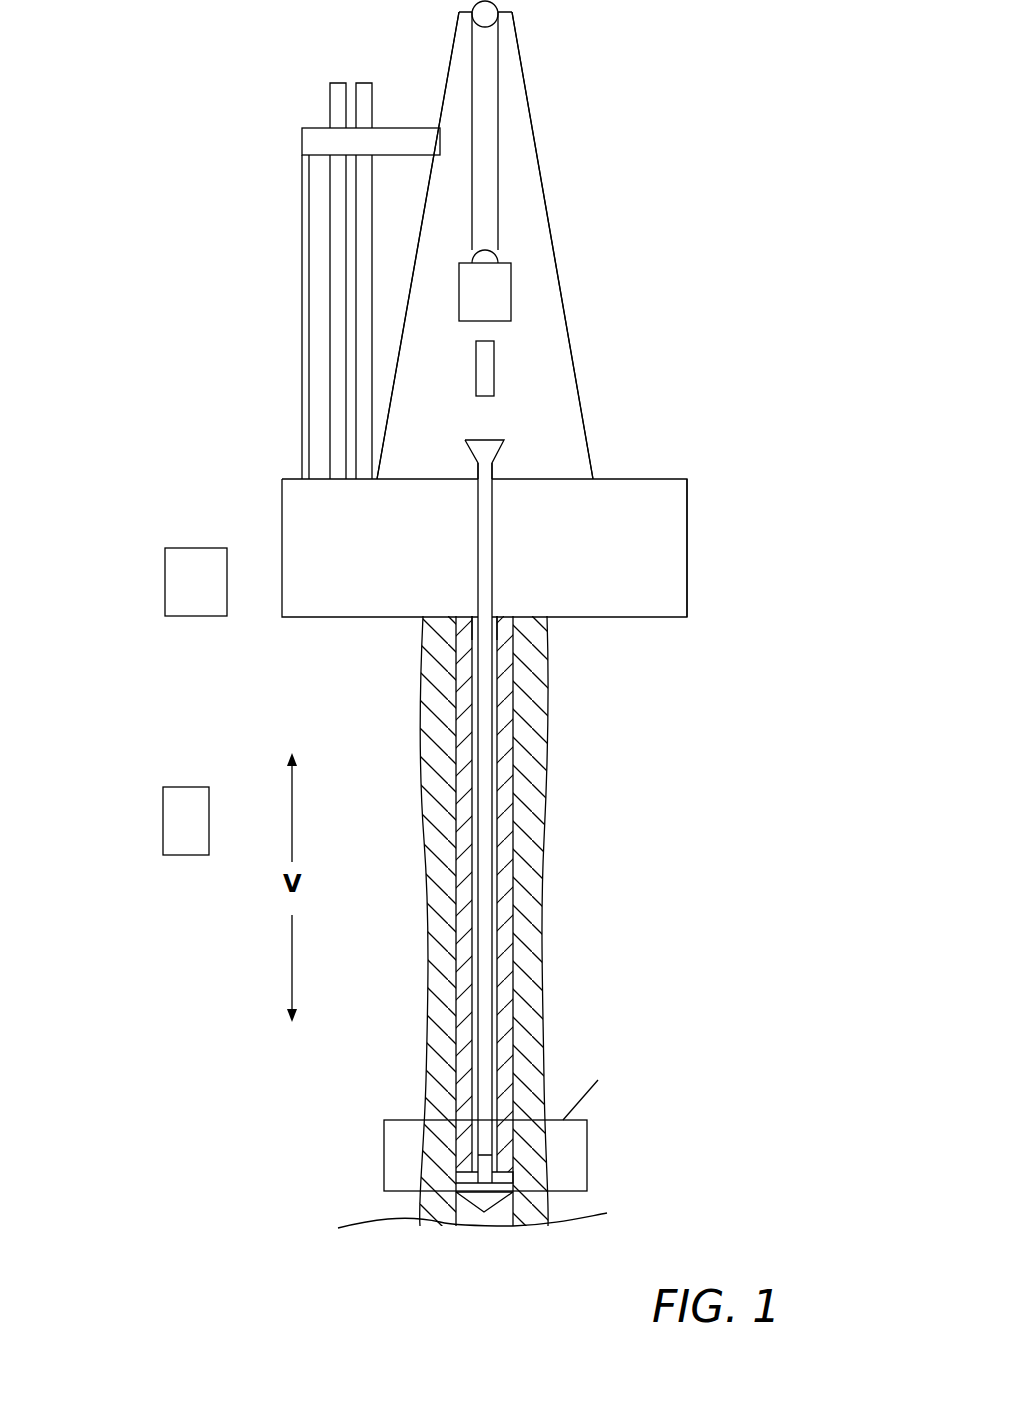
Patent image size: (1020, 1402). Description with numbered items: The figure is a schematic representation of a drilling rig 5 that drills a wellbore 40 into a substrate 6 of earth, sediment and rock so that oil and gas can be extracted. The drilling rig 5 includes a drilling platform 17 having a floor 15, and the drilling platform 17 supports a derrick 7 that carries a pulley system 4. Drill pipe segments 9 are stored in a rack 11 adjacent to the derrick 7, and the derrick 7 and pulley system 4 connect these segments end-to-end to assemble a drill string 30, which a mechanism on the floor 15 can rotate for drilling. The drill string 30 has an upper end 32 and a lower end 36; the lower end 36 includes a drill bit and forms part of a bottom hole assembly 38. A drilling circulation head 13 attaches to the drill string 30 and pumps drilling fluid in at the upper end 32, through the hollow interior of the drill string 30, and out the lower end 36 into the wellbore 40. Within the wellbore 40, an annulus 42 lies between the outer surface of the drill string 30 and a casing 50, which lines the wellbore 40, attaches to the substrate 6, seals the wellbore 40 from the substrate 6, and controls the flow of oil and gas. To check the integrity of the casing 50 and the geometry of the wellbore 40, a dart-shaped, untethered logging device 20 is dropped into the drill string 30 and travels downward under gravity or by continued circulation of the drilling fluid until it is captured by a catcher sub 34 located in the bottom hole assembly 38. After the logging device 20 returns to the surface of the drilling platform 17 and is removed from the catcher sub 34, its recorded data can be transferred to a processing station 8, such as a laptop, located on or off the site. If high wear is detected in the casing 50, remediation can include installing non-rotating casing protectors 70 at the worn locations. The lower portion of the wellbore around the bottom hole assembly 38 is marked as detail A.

The pulley system 4 is at (516, 190).
The drilling rig 5 is at (755, 128).
The substrate 6 is at (423, 660).
The derrick 7 is at (530, 122).
The processing station 8 is at (165, 582).
The drill pipe segments 9 is at (338, 83).
The rack 11 is at (313, 142).
The drilling circulation head 13 is at (511, 293).
The floor 15 is at (643, 479).
The drilling platform 17 is at (687, 532).
The logging device 20 is at (494, 373).
The drill string 30 is at (492, 555).
The upper end 32 is at (524, 439).
The catcher sub 34 is at (457, 1175).
The lower end 36 is at (473, 1200).
The bottom hole assembly 38 is at (528, 1146).
The wellbore 40 is at (463, 600).
The annulus 42 is at (502, 602).
The casing 50 is at (507, 783).
The non-rotating casing protectors 70 is at (163, 820).
The detail region A is at (502, 1123).